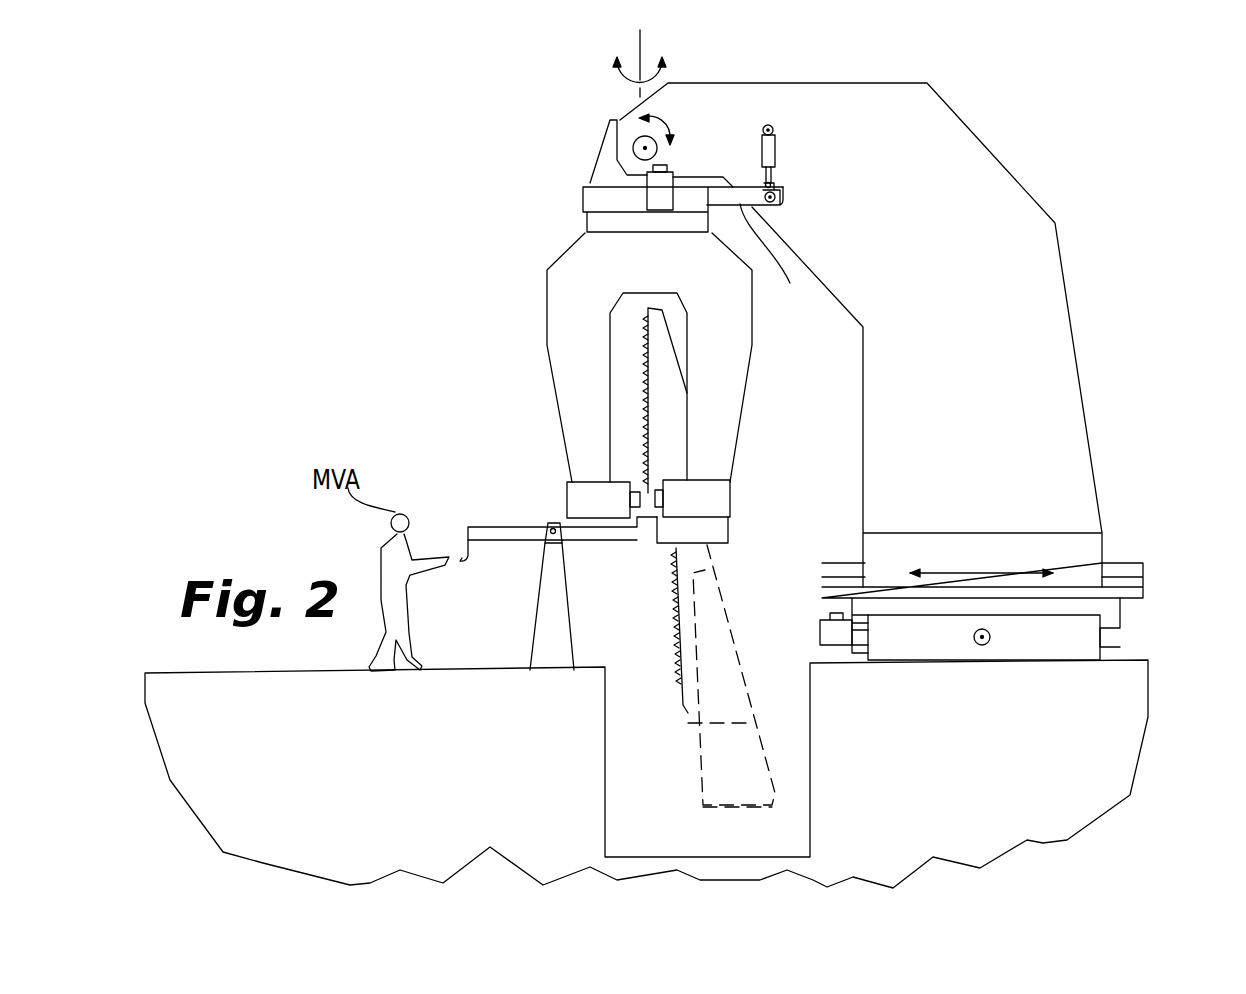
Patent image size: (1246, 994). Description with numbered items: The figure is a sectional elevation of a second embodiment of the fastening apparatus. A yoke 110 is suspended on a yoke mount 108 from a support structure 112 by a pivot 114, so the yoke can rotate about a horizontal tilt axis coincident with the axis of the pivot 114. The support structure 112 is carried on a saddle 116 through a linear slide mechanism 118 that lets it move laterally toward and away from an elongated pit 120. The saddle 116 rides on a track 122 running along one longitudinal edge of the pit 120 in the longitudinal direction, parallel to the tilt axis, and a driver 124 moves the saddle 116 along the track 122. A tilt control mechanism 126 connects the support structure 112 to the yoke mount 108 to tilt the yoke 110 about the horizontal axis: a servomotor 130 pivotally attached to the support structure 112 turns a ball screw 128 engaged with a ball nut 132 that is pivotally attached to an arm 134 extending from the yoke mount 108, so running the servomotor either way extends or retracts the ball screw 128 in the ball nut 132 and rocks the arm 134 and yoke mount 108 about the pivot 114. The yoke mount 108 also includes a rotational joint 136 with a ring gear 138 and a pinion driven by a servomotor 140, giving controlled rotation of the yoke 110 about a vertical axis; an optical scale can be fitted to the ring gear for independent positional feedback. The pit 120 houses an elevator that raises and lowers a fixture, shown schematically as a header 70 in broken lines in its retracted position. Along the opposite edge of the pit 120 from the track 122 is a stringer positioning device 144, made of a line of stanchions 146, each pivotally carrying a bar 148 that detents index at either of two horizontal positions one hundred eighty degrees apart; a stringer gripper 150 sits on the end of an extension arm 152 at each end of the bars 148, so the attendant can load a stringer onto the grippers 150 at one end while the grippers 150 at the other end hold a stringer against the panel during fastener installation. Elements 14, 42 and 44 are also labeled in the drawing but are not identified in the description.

The band saw blade 14 is at (745, 590).
The upper blade guide 42 is at (590, 497).
The lower blade guide 44 is at (717, 498).
The header 70 is at (723, 760).
The yoke mount 108 is at (598, 178).
The yoke 110 is at (531, 340).
The support structure 112 is at (1086, 425).
The pivot 114 is at (633, 140).
The saddle 116 is at (1107, 605).
The linear slide mechanism 118 is at (1135, 573).
The elongated pit 120 is at (638, 731).
The track 122 is at (1090, 630).
The driver 124 is at (823, 628).
The tilt control mechanism 126 is at (793, 170).
The ball screw 128 is at (783, 191).
The servomotor 130 is at (762, 147).
The ball nut 132 is at (790, 207).
The arm 134 is at (775, 265).
The rotational joint 136 is at (574, 154).
The ring gear 138 is at (587, 213).
The servomotor 140 is at (665, 195).
The stringer positioning device 144 is at (529, 532).
The stanchions 146 is at (550, 610).
The bar 148 is at (507, 530).
The stringer gripper 150 is at (462, 558).
The extension arm 152 is at (462, 553).